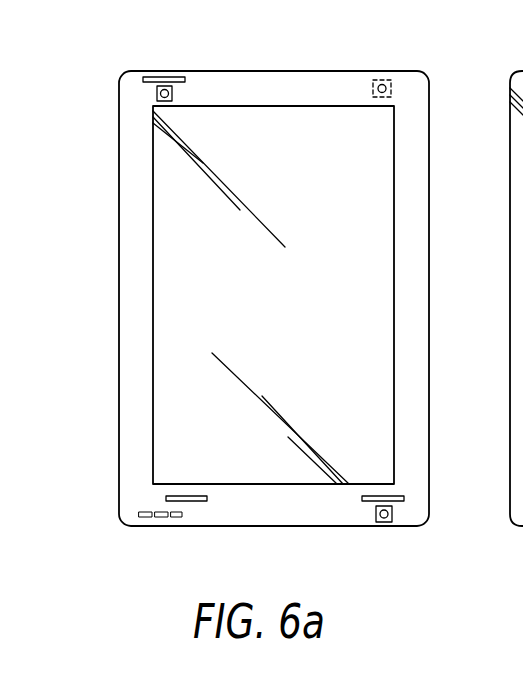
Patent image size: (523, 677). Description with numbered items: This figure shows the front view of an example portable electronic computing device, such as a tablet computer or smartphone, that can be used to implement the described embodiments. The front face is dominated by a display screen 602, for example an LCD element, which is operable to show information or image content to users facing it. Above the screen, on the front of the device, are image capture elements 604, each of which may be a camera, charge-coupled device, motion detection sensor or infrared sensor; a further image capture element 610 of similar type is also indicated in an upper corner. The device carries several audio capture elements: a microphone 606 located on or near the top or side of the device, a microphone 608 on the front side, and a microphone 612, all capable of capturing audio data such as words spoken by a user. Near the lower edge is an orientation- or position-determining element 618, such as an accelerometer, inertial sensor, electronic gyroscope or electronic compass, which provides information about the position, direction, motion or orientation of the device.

The display screen 602 is at (153, 353).
The image capture element 604 is at (157, 94).
The microphone 606 is at (172, 77).
The microphone 608 is at (404, 498).
The image capture element 610 is at (379, 80).
The microphone 612 is at (190, 502).
The orientation- or position-determining element 618 is at (161, 518).